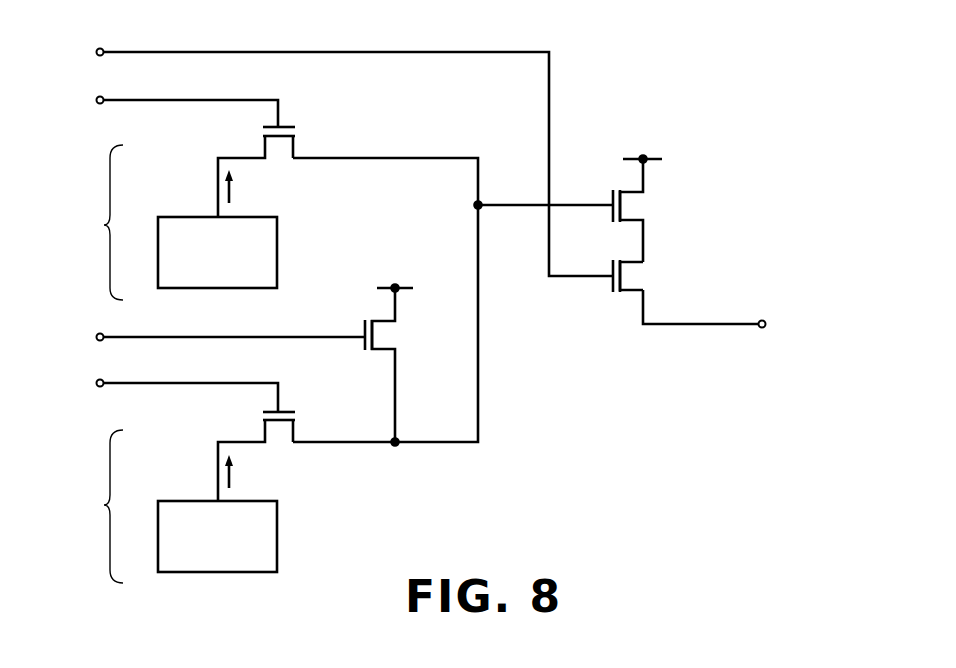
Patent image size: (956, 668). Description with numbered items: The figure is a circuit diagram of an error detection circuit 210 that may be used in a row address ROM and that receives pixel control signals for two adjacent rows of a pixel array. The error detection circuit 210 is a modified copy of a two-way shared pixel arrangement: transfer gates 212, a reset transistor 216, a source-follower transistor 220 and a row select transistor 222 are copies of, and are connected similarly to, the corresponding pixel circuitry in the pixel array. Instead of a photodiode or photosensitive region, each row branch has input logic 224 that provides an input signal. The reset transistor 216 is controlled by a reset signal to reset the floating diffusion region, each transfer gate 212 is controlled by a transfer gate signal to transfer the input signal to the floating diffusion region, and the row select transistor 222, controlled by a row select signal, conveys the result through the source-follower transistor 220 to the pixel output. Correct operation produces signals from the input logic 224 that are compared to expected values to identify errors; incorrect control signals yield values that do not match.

The error detection circuit 210 is at (697, 40).
The transfer gate 212 is at (282, 152).
The reset transistor 216 is at (388, 333).
The source-follower transistor 220 is at (637, 207).
The row select transistor 222 is at (637, 278).
The input logic 224 is at (277, 254).